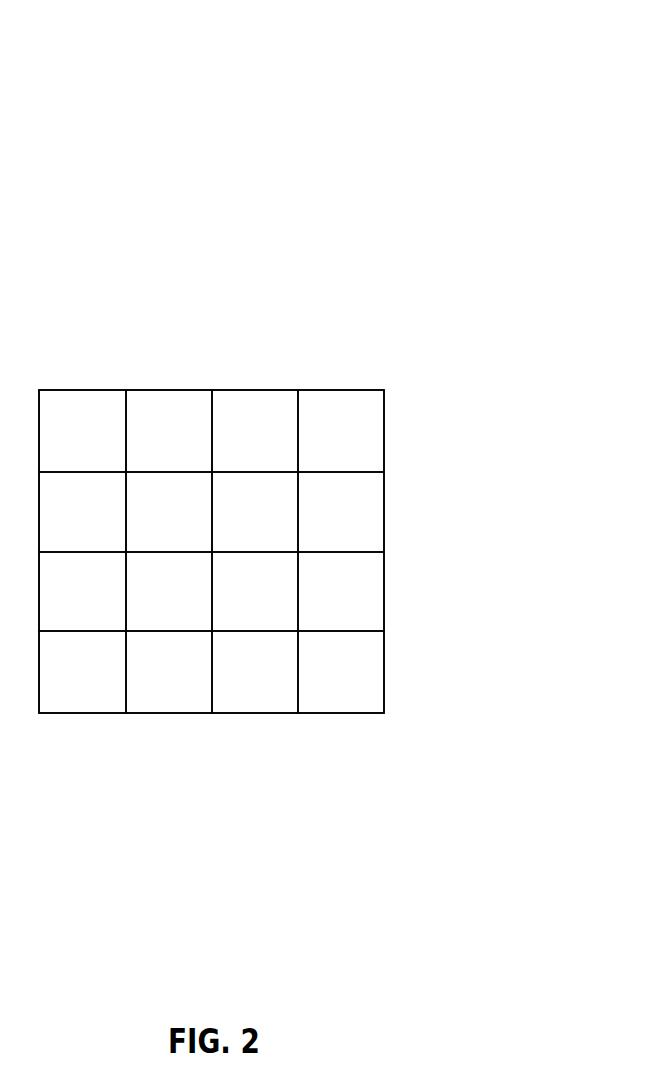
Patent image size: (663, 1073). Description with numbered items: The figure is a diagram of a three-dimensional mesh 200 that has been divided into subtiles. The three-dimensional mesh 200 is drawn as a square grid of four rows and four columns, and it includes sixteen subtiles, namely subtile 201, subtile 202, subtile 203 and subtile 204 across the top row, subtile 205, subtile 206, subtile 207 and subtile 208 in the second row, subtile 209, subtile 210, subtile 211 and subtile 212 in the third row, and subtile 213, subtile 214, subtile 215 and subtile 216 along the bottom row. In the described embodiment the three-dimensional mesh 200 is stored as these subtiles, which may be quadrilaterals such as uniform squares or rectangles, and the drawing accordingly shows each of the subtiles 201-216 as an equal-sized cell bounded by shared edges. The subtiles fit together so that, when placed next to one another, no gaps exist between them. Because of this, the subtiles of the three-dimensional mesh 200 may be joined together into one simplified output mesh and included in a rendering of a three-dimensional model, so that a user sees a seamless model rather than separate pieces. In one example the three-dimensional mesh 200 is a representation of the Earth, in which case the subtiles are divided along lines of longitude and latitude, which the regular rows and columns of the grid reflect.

The three-dimensional mesh 200 is at (531, 78).
The subtile 201 is at (82, 431).
The subtile 202 is at (169, 431).
The subtile 203 is at (255, 431).
The subtile 204 is at (341, 431).
The subtile 205 is at (82, 512).
The subtile 206 is at (169, 512).
The subtile 207 is at (255, 512).
The subtile 208 is at (341, 512).
The subtile 209 is at (82, 591).
The subtile 210 is at (169, 591).
The subtile 211 is at (255, 591).
The subtile 212 is at (341, 591).
The subtile 213 is at (82, 672).
The subtile 214 is at (169, 672).
The subtile 215 is at (255, 672).
The subtile 216 is at (341, 672).